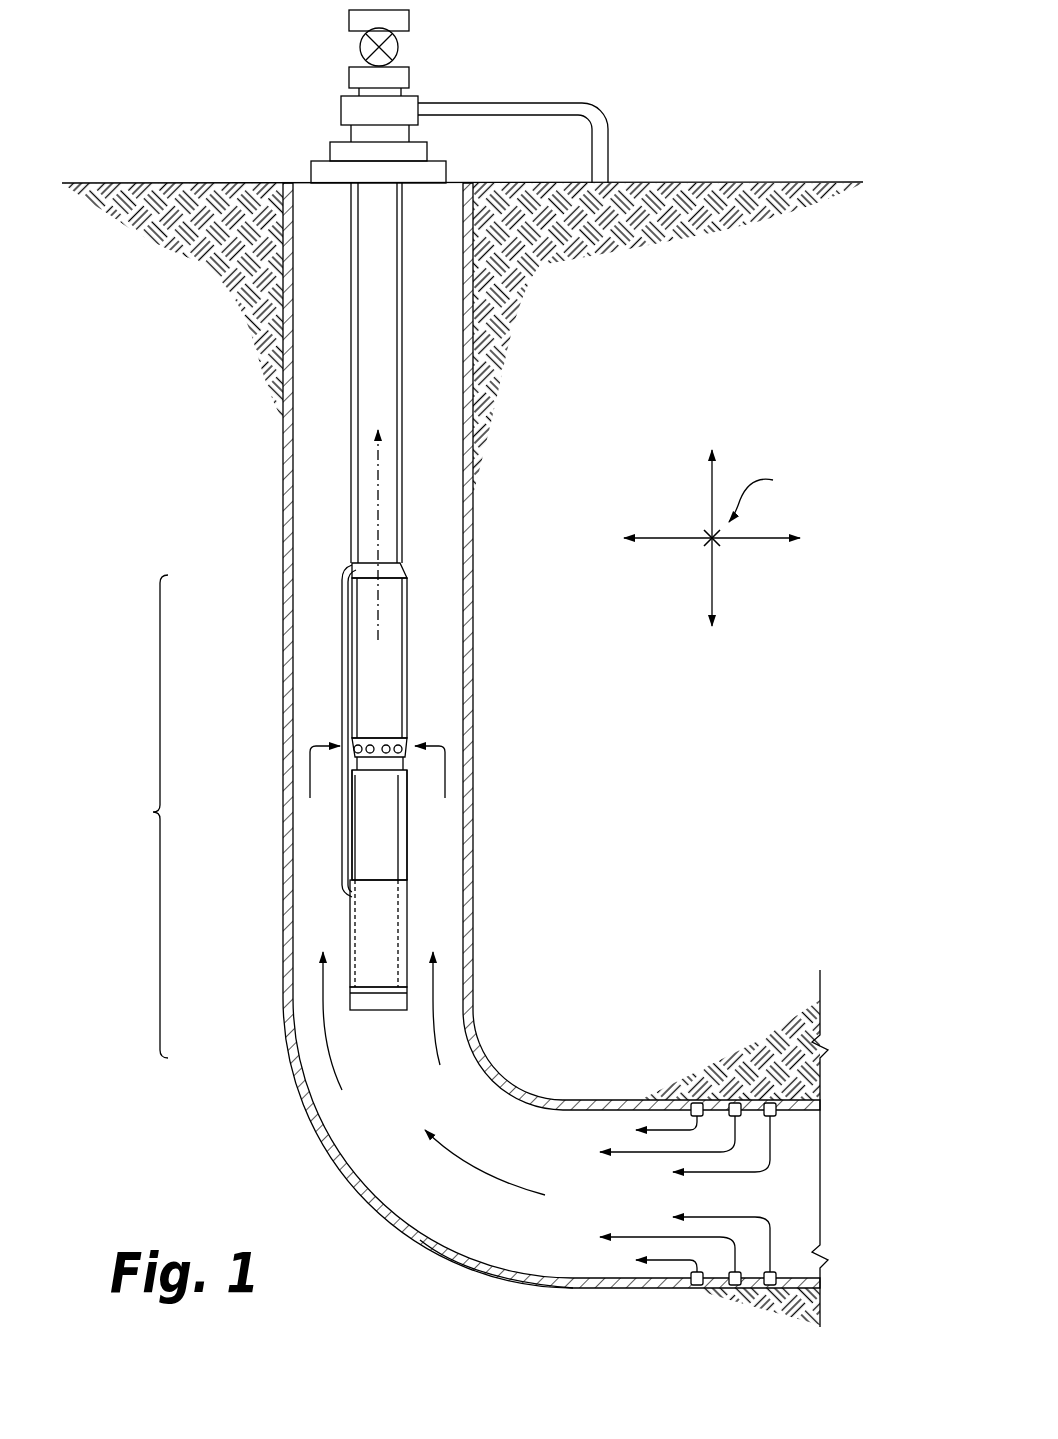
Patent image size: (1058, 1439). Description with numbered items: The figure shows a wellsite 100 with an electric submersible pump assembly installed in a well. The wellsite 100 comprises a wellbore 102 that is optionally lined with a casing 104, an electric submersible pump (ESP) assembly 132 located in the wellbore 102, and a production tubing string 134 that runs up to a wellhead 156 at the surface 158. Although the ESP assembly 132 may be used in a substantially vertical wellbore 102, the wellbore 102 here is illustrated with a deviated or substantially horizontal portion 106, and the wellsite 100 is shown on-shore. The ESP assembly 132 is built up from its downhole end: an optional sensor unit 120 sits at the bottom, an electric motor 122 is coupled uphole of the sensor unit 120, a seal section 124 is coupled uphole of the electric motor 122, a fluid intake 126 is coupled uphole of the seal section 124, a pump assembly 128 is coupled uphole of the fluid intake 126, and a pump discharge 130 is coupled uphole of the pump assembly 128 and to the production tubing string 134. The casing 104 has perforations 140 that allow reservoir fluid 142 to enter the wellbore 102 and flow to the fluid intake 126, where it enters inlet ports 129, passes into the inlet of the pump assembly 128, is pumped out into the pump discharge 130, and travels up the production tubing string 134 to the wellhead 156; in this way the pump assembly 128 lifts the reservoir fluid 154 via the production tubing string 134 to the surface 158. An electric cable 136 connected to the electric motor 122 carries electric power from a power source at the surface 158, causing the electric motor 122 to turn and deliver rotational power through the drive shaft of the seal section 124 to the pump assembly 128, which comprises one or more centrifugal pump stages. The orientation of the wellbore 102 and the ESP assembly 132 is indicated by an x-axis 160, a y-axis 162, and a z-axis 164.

The wellsite 100 is at (187, 128).
The wellbore 102 is at (325, 458).
The casing 104 is at (288, 428).
The substantially horizontal portion 106 is at (465, 1272).
The sensor unit 120 is at (373, 997).
The electric motor 122 is at (372, 930).
The seal section 124 is at (372, 800).
The fluid intake 126 is at (383, 764).
The pump assembly 128 is at (365, 660).
The inlet ports 129 is at (385, 746).
The pump discharge 130 is at (362, 572).
The electric submersible pump assembly 132 is at (142, 816).
The production tubing string 134 is at (375, 270).
The electric cable 136 is at (350, 508).
The perforations 140 is at (735, 1103).
The reservoir fluid 142 is at (622, 1152).
The reservoir fluid 154 is at (378, 516).
The wellhead 156 is at (409, 17).
The surface 158 is at (745, 182).
The x-axis 160 is at (795, 470).
The y-axis 162 is at (712, 395).
The z-axis 164 is at (853, 548).